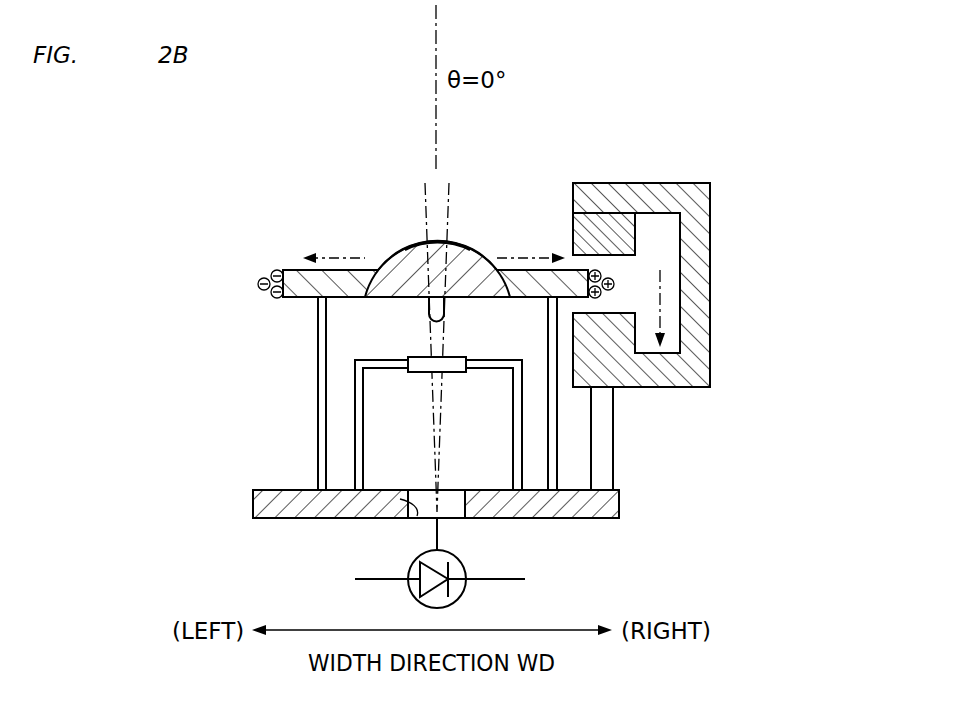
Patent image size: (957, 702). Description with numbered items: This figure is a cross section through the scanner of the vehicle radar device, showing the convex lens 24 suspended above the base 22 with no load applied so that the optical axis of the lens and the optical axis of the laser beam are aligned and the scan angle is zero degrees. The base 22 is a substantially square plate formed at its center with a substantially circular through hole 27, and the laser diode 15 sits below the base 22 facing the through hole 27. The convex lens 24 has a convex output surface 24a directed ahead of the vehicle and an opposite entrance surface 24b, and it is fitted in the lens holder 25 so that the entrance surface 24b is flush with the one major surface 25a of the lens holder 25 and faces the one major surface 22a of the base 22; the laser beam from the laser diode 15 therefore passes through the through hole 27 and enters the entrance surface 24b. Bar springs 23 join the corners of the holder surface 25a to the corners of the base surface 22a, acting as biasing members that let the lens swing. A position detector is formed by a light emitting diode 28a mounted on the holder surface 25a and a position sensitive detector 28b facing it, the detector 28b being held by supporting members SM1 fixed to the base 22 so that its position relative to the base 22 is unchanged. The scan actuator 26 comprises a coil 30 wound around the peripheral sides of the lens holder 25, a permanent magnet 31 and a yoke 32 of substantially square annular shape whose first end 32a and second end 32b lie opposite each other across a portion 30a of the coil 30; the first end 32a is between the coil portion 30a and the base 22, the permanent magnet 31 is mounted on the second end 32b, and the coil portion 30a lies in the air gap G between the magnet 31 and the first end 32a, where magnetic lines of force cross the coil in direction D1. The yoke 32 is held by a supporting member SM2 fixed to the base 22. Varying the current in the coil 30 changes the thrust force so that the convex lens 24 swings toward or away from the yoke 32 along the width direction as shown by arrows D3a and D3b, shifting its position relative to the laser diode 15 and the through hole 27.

The laser diode 15 is at (468, 592).
The base 22 is at (262, 518).
The one major surface of the base 22a is at (270, 489).
The bar springs 23 is at (318, 420).
The convex lens 24 is at (401, 240).
The convex output surface 24a is at (460, 243).
The entrance surface 24b is at (386, 298).
The lens holder 25 is at (296, 298).
The one major surface of the lens holder 25a is at (519, 298).
The scan actuator 26 is at (688, 254).
The through hole 27 is at (417, 518).
The light emitting diode 28a is at (425, 301).
The position sensitive detector 28b is at (449, 373).
The coil 30 is at (258, 285).
The portion of the coil 30a is at (588, 272).
The permanent magnet 31 is at (597, 270).
The yoke 32 is at (647, 186).
The first end of the yoke 32a is at (660, 372).
The second end of the yoke 32b is at (600, 200).
The supporting members SM1 is at (363, 424).
The supporting member SM2 is at (609, 440).
The air gap G is at (617, 280).
The direction of magnetic lines of force D1 is at (661, 278).
The swing direction toward the yoke D3a is at (531, 245).
The swing direction away from the yoke D3b is at (341, 245).